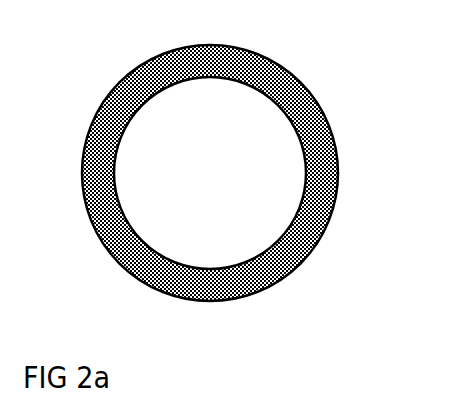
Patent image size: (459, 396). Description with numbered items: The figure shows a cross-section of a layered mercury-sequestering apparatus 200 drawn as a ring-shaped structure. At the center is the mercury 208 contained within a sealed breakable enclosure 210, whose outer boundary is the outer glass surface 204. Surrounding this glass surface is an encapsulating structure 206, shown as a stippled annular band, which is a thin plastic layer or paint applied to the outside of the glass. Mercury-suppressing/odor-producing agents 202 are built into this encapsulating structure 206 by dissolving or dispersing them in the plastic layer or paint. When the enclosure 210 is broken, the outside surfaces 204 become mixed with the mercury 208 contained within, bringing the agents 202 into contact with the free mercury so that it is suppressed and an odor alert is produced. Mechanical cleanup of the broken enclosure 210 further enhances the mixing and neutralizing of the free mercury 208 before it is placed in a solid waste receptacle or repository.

The layered mercury-sequestering apparatus 200 is at (115, 52).
The mercury-suppressing/odor-producing agents 202 is at (287, 253).
The outer glass surface 204 is at (283, 110).
The encapsulating structure 206 is at (138, 278).
The mercury 208 is at (275, 173).
The sealed breakable enclosure 210 is at (155, 253).